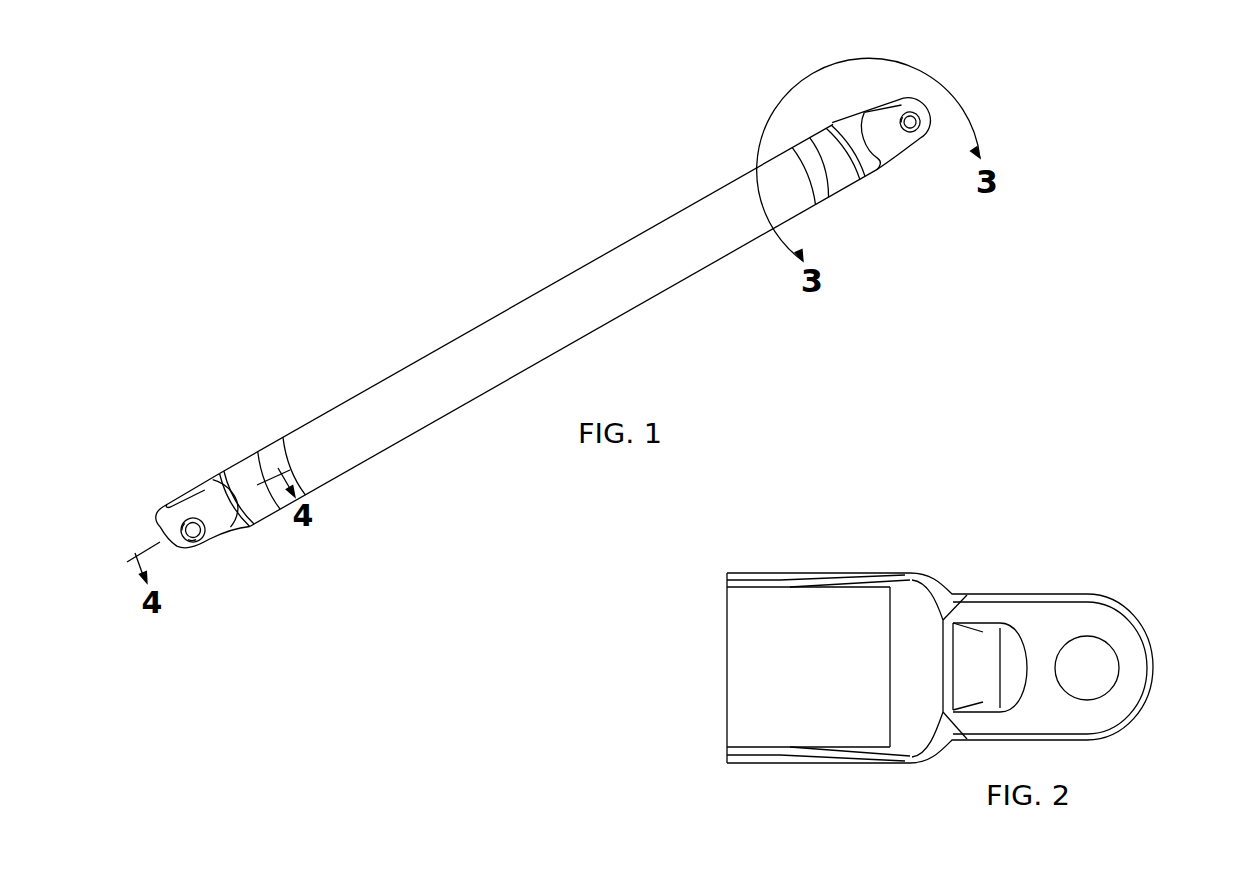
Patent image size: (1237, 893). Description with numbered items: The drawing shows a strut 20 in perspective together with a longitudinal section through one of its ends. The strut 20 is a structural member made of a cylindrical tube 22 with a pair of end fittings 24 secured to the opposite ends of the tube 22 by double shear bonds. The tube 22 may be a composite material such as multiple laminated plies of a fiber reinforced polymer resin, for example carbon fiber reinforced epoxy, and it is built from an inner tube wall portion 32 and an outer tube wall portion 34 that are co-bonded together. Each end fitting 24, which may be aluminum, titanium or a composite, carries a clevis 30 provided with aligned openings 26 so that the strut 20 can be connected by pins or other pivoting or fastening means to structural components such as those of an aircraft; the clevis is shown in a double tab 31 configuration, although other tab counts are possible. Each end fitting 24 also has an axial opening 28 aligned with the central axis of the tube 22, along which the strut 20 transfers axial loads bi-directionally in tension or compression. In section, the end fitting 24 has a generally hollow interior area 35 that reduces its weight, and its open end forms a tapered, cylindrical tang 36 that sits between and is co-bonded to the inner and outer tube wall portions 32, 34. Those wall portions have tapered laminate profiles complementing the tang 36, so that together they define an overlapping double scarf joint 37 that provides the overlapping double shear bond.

In FIG. 1, the strut 20 is at (433, 296).
In FIG. 1, the cylindrical tube 22 is at (633, 285).
In FIG. 2, the cylindrical tube 22 is at (722, 571).
In FIG. 1, the end fitting 24 is at (213, 480).
In FIG. 2, the end fitting 24 is at (1133, 634).
In FIG. 1, the aligned openings 26 is at (203, 541).
In FIG. 2, the aligned openings 26 is at (1121, 668).
In FIG. 1, the axial opening 28 is at (110, 557).
In FIG. 1, the clevis 30 is at (177, 507).
In FIG. 2, the clevis 30 is at (1097, 618).
In FIG. 1, the double tab 31 is at (167, 528).
In FIG. 2, the inner tube wall portion 32 is at (738, 587).
In FIG. 2, the outer tube wall portion 34 is at (753, 578).
In FIG. 2, the interior area 35 is at (988, 662).
In FIG. 2, the tang 36 is at (845, 579).
In FIG. 2, the double scarf joint 37 is at (800, 581).